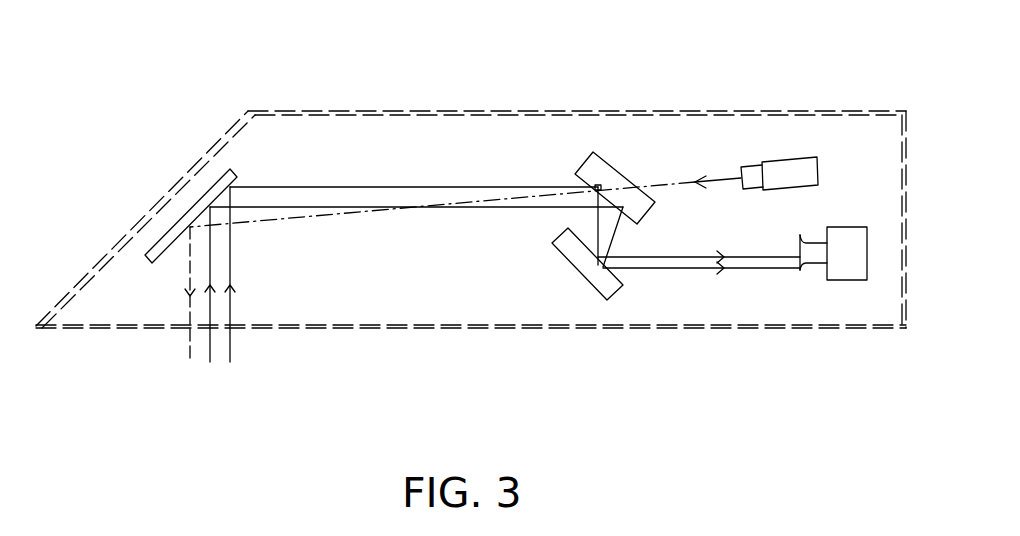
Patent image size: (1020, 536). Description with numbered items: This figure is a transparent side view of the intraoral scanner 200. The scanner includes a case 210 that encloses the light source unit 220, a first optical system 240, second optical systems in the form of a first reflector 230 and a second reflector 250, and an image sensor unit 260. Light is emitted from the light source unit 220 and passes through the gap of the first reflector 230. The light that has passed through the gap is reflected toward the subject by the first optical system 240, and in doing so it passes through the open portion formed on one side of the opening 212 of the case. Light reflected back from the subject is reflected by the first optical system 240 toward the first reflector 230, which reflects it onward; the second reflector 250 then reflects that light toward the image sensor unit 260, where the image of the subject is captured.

The intraoral scanner 200 is at (138, 88).
The case 210 is at (355, 111).
The opening 212 is at (128, 329).
The light source unit 220 is at (787, 157).
The first reflector 230 is at (611, 162).
The first optical system 240 is at (187, 212).
The second reflector 250 is at (576, 283).
The image sensor unit 260 is at (847, 282).